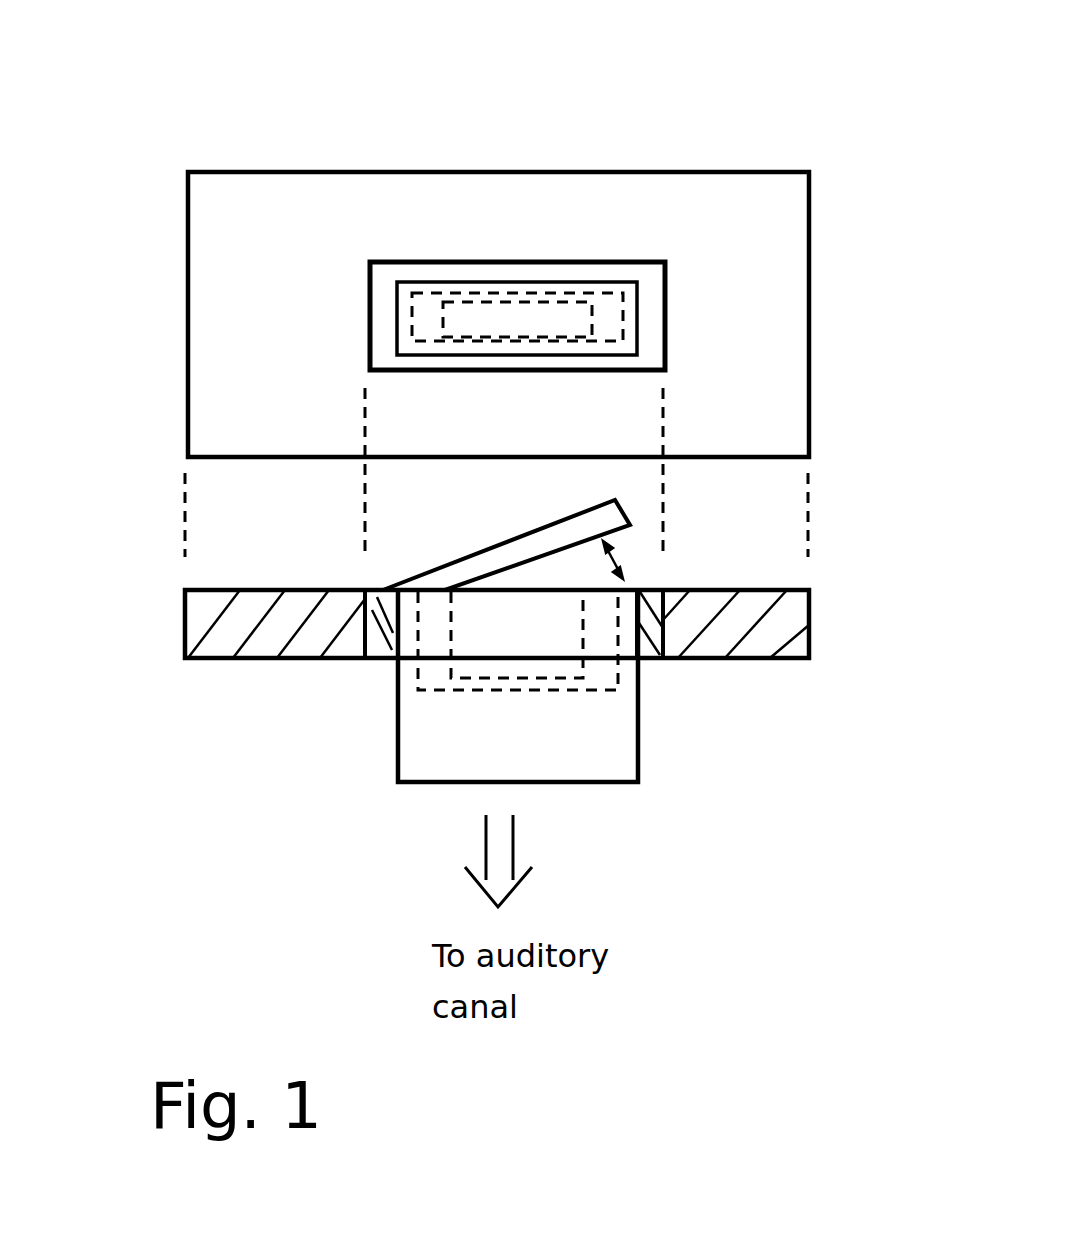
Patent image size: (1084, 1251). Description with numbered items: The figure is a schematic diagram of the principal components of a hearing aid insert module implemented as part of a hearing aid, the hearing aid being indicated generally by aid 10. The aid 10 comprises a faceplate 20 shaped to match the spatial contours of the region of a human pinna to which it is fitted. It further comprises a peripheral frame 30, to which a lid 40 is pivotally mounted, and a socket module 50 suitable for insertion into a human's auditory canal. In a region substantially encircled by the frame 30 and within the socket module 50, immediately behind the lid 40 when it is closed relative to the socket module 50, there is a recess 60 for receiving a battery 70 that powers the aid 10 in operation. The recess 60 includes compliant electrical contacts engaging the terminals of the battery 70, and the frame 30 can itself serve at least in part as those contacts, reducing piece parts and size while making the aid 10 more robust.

The hearing aid 10 is at (684, 103).
The faceplate 20 is at (762, 297).
The peripheral frame 30 is at (385, 283).
The lid 40 is at (402, 333).
The socket module 50 is at (598, 737).
The recess 60 is at (424, 313).
The battery 70 is at (510, 314).